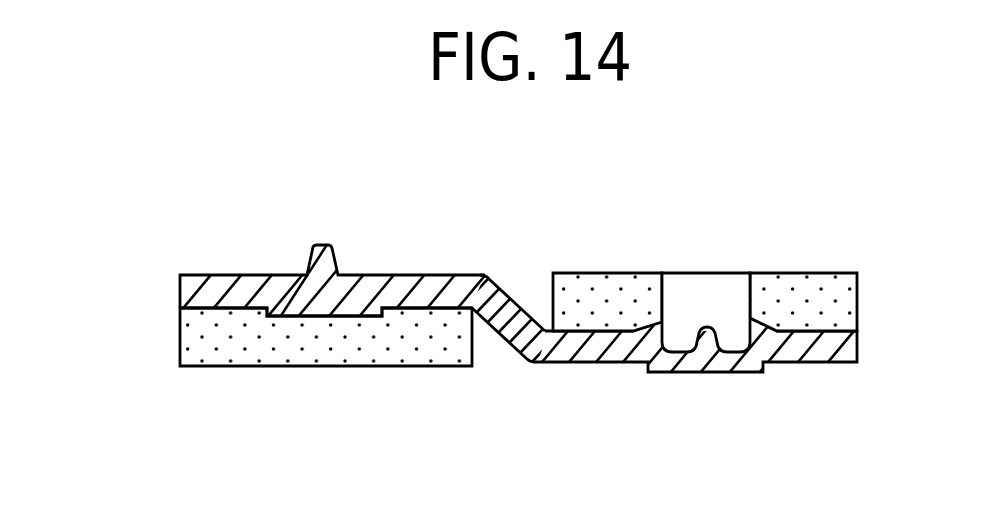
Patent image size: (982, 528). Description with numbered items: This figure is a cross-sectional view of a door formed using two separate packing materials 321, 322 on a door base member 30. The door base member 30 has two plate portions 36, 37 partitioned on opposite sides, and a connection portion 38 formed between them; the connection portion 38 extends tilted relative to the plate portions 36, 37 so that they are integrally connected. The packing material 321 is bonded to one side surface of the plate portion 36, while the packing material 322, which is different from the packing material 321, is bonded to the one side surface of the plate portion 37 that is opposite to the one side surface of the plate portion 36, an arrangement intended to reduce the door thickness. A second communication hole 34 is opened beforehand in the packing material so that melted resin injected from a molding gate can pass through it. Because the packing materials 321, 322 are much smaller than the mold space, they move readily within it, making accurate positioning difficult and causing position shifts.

The door base member 30 is at (478, 323).
The second communication hole 34 is at (708, 287).
The plate portion 36 is at (372, 287).
The plate portion 37 is at (804, 353).
The connection portion 38 is at (520, 323).
The packing material 321 is at (275, 357).
The packing material 322 is at (818, 286).